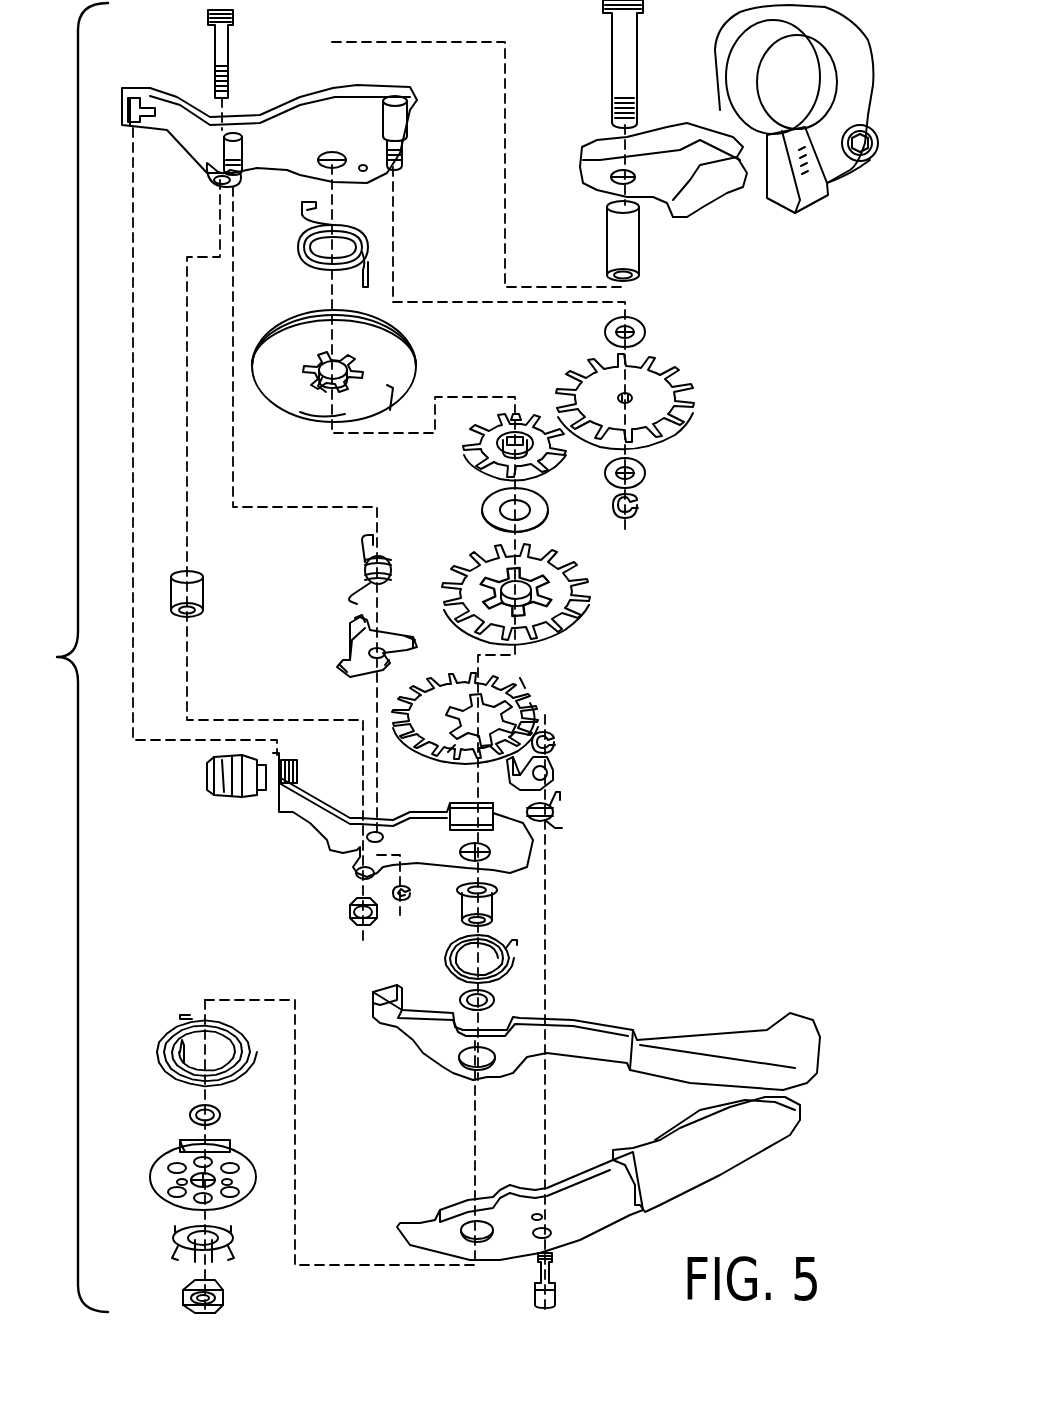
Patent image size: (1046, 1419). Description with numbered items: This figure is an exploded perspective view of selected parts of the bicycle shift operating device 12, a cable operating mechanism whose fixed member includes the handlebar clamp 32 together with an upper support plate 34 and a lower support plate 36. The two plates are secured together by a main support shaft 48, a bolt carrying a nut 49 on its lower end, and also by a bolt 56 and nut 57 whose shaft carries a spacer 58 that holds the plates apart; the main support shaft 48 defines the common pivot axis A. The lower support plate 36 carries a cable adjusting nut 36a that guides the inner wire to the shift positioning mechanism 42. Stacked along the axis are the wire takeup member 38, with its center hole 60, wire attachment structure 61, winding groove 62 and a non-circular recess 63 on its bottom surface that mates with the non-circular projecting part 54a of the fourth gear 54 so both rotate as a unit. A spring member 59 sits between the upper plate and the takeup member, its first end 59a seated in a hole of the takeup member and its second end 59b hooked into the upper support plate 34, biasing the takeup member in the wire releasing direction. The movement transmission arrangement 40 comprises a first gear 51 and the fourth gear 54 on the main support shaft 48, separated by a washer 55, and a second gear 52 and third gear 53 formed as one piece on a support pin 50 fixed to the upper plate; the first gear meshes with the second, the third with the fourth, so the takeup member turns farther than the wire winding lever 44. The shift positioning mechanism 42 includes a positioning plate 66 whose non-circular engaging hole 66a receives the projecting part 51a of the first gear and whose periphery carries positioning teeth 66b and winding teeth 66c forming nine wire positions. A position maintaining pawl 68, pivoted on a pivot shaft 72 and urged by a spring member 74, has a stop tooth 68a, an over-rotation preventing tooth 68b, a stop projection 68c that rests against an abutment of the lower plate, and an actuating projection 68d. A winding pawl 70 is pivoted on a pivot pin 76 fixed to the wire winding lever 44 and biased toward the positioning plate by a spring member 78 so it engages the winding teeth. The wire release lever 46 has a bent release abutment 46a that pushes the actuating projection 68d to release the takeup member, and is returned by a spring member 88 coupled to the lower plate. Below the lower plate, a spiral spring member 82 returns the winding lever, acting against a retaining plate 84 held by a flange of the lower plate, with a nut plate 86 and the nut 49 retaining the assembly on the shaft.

The bicycle shift operating device 12 is at (591, 121).
The handlebar clamp 32 is at (720, 42).
The upper support plate 34 is at (265, 115).
The lower support plate 36 is at (373, 833).
The cable adjusting nut 36a is at (228, 795).
The wire takeup member 38 is at (313, 420).
The movement transmission arrangement 40 is at (675, 431).
The shift positioning mechanism 42 is at (542, 741).
The wire winding lever 44 is at (753, 1158).
The wire release lever 46 is at (555, 1015).
The release abutment 46a is at (373, 998).
The main support shaft 48 is at (613, 42).
The nut 49 is at (187, 1295).
The support pin 50 is at (404, 150).
The first gear 51 is at (556, 594).
The non-circular projecting part 51a is at (555, 600).
The second gear 52 is at (680, 413).
The third gear 53 is at (672, 383).
The fourth gear 54 is at (477, 410).
The non-circular projecting part 54a is at (523, 412).
The washer 55 is at (480, 515).
The bolt 56 is at (207, 40).
The nut 57 is at (350, 912).
The spacer 58 is at (207, 600).
The spring member 59 is at (362, 232).
The first end 59a is at (370, 278).
The second end 59b is at (350, 207).
The center hole 60 is at (345, 365).
The wire attachment structure 61 is at (405, 392).
The winding groove 62 is at (364, 376).
The non-circular recess 63 is at (310, 385).
The positioning plate 66 is at (474, 730).
The non-circular engaging hole 66a is at (520, 713).
The positioning teeth 66b is at (520, 683).
The winding teeth 66c is at (413, 728).
The position maintaining pawl 68 is at (328, 654).
The stop tooth 68a is at (408, 650).
The over-rotation preventing tooth 68b is at (388, 668).
The stop projection 68c is at (345, 667).
The actuating projection 68d is at (355, 620).
The winding pawl 70 is at (555, 773).
The pivot shaft 72 is at (218, 157).
The spring member 74 is at (365, 572).
The pivot pin 76 is at (560, 1283).
The spring member 78 is at (565, 815).
The spring member 82 is at (170, 1030).
The retaining plate 84 is at (160, 1155).
The nut plate 86 is at (175, 1250).
The spring member 88 is at (446, 958).